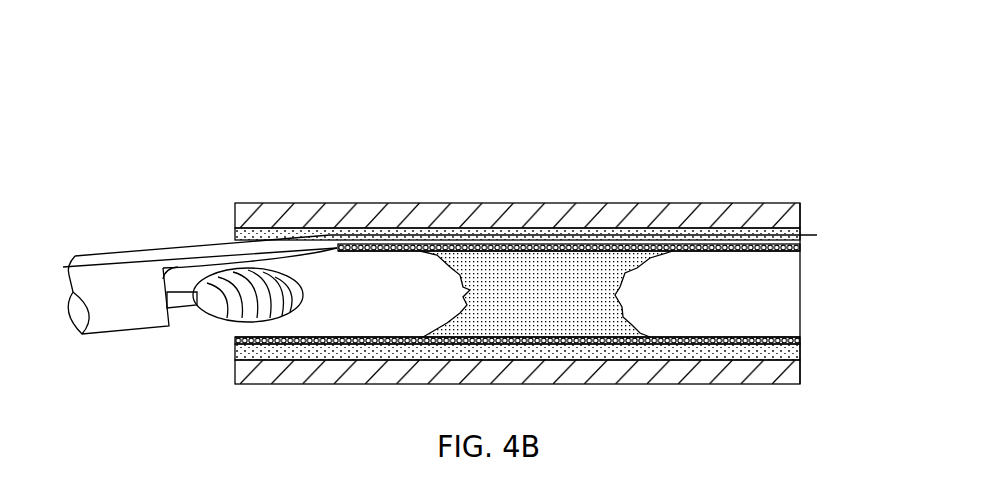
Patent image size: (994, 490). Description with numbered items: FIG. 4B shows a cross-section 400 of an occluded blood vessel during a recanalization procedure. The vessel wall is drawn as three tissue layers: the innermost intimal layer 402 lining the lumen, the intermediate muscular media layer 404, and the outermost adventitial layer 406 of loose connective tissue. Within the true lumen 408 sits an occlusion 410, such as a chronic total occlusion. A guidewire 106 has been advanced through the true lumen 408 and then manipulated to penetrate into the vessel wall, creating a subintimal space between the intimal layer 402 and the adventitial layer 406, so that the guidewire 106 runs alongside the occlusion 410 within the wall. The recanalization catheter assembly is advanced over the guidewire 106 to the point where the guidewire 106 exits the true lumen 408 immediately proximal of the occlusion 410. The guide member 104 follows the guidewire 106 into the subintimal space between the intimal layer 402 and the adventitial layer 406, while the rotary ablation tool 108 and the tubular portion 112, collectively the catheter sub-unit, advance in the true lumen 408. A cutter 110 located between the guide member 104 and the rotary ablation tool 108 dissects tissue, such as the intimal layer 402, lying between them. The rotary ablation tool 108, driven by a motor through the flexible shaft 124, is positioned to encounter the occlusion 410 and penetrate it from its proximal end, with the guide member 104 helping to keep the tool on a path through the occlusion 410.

The cross-section of a blood vessel 400 is at (449, 42).
The guide member 104 is at (258, 245).
The guidewire 106 is at (568, 235).
The rotary ablation tool 108 is at (270, 292).
The cutter 110 is at (166, 268).
The tubular portion 112 is at (153, 313).
The flexible shaft 124 is at (177, 298).
The intimal layer 402 is at (785, 248).
The media layer 404 is at (338, 235).
The adventitial layer 406 is at (778, 212).
The true lumen 408 is at (408, 297).
The occlusion 410 is at (510, 297).